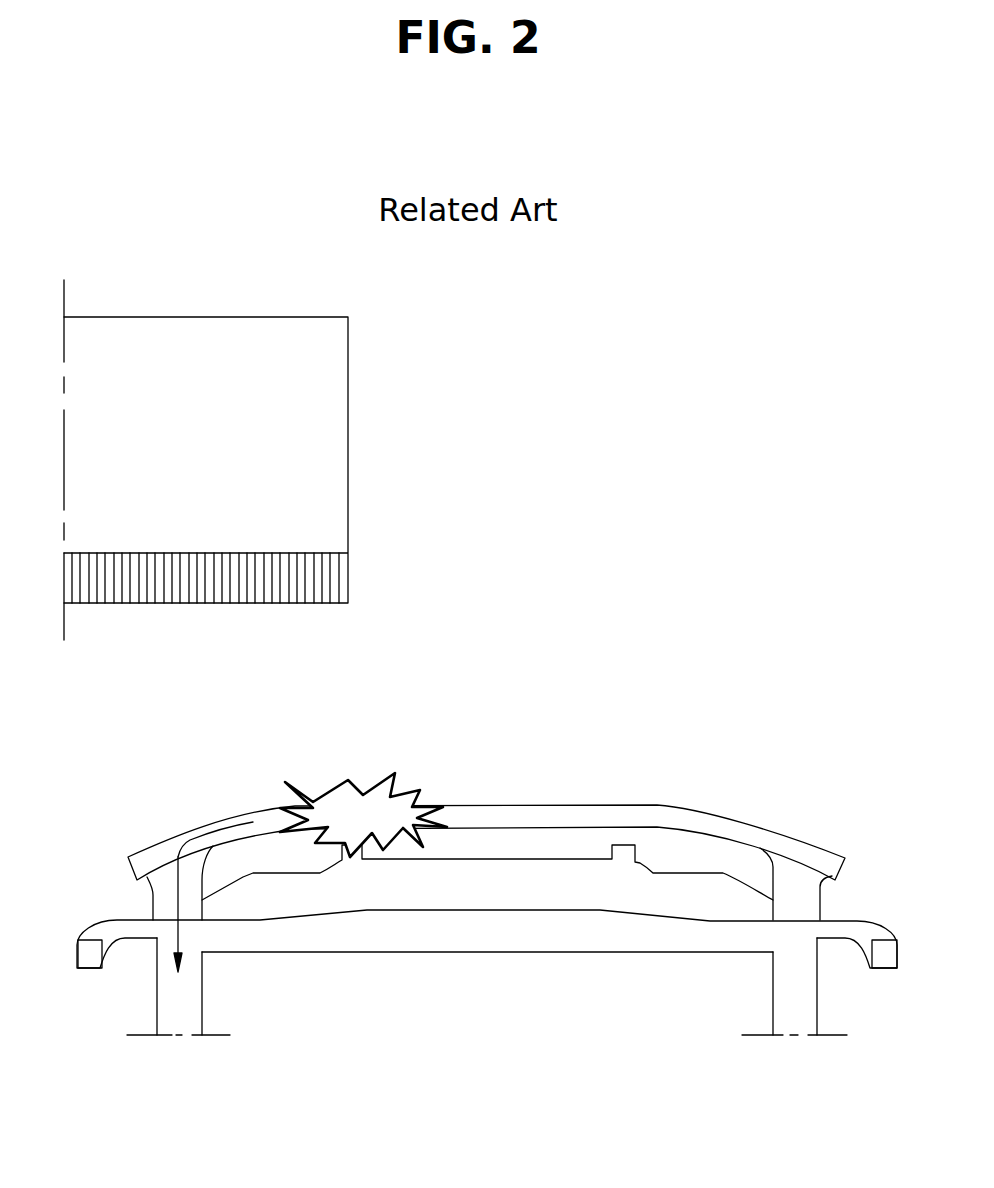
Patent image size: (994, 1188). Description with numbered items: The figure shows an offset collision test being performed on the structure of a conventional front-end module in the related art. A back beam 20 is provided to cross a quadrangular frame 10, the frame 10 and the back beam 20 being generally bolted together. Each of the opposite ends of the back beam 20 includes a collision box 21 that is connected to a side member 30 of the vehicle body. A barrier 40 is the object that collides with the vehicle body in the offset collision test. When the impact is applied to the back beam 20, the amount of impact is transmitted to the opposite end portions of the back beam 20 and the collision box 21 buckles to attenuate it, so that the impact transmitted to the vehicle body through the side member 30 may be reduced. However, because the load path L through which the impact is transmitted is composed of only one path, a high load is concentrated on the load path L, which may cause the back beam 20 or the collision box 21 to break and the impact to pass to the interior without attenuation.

The frame 10 is at (451, 942).
The back beam 20 is at (540, 810).
The collision box 21 is at (165, 899).
The side member 30 is at (190, 1004).
The barrier 40 is at (328, 447).
The load path L is at (220, 830).